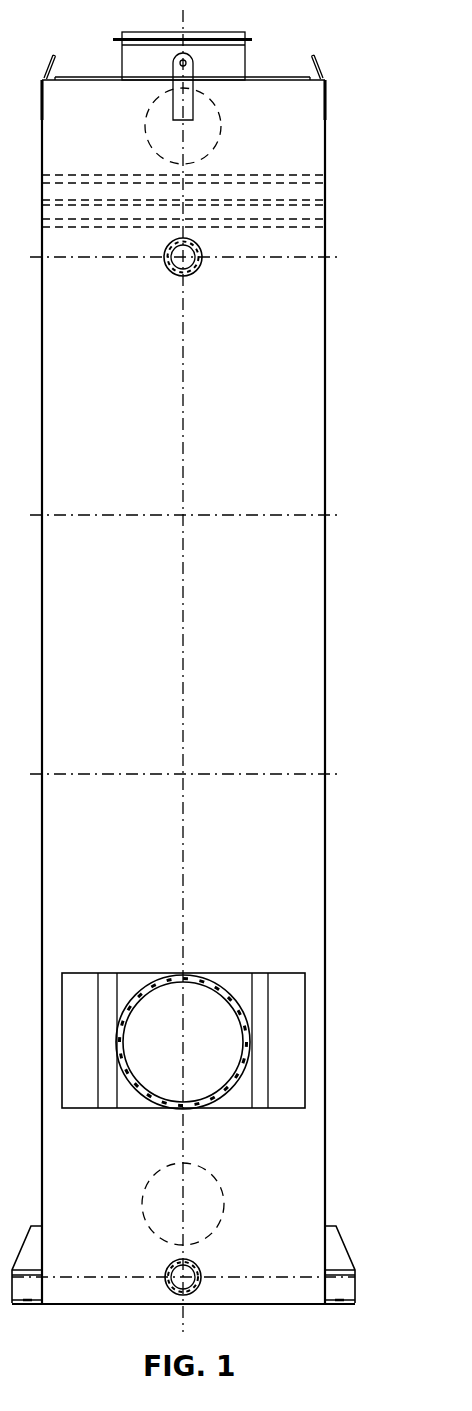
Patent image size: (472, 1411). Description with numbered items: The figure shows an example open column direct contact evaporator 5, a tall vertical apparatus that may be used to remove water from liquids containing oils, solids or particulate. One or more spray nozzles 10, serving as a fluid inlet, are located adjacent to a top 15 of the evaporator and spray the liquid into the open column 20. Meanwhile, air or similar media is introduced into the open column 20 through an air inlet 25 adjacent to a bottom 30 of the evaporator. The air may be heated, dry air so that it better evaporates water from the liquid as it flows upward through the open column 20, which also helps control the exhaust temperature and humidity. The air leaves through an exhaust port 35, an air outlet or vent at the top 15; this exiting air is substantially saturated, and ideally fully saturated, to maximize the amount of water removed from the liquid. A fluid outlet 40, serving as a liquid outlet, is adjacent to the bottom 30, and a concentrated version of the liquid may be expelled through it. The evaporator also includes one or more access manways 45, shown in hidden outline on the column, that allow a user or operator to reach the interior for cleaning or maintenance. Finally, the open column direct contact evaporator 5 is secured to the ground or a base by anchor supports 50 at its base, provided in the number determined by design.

The open column direct contact evaporator 5 is at (344, 65).
The spray nozzle 10 is at (197, 263).
The top 15 is at (287, 72).
The open column 20 is at (313, 632).
The air inlet 25 is at (200, 997).
The bottom 30 is at (277, 1305).
The exhaust port 35 is at (223, 35).
The fluid outlet 40 is at (197, 1265).
The access manway 45 is at (212, 128).
The anchor support 50 is at (347, 1250).